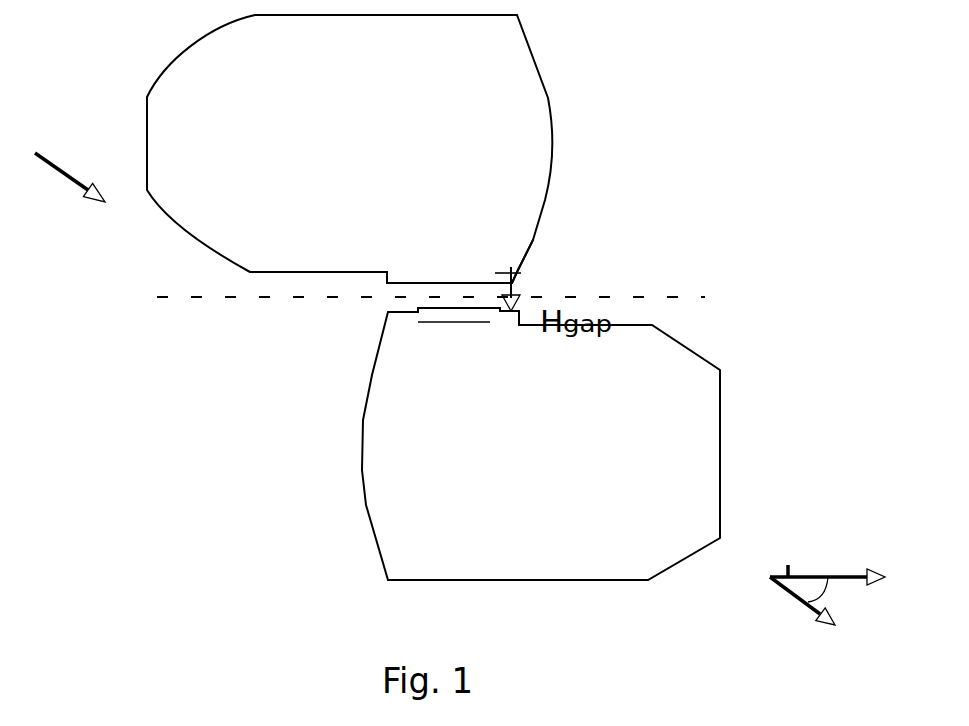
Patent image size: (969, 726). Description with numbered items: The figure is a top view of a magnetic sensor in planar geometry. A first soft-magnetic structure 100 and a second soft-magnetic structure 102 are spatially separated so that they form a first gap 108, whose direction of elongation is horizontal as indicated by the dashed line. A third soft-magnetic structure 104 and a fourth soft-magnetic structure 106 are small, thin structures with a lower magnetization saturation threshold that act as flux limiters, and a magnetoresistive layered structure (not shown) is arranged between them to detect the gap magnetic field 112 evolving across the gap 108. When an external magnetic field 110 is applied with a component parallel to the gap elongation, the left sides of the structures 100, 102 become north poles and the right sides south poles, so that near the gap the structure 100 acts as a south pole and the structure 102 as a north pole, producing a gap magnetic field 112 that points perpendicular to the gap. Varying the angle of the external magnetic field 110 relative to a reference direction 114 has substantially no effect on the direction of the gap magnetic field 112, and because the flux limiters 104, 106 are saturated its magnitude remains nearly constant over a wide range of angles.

The first soft-magnetic structure 100 is at (552, 98).
The second soft-magnetic structure 102 is at (720, 390).
The third soft-magnetic structure 104 is at (519, 271).
The fourth soft-magnetic structure 106 is at (437, 324).
The first gap 108 is at (400, 297).
The external magnetic field 110 is at (66, 175).
The gap magnetic field 112 is at (517, 288).
The reference direction 114 is at (829, 578).